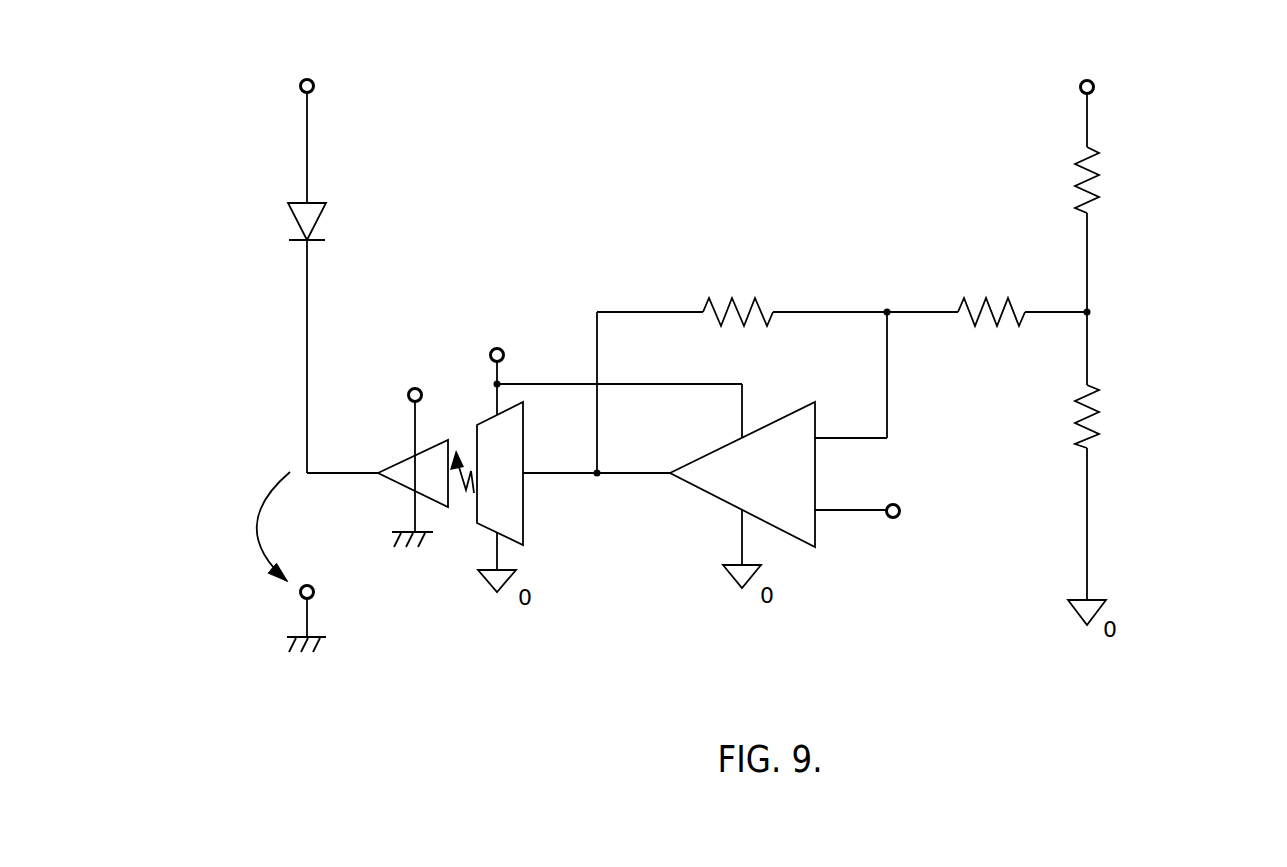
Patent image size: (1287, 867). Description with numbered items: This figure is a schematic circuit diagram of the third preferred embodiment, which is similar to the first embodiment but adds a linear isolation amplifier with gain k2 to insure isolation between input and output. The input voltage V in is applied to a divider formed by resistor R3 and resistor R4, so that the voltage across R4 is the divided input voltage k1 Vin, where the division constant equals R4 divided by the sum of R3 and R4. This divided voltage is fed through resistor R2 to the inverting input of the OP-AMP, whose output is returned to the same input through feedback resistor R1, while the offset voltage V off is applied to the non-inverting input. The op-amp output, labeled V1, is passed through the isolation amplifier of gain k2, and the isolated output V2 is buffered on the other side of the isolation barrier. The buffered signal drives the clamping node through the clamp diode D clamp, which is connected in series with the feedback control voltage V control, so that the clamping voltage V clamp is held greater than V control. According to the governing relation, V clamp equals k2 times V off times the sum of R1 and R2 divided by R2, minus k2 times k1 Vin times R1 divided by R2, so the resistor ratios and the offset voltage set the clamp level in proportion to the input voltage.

The feedback control voltage level V control is at (253, 130).
The clamp diode D clamp is at (254, 221).
The clamping voltage level V clamp is at (240, 562).
The voltage V2 terminal / buffer amplifier V2 is at (413, 451).
The linear isolation amplifier gain k2 is at (458, 449).
The voltage V1 terminal V1 is at (493, 364).
The operational amplifier OP-AMP is at (742, 474).
The offset voltage V off is at (890, 510).
The resistor R1 is at (738, 294).
The resistor R2 is at (991, 293).
The resistor R3 is at (1108, 180).
The resistor R4 is at (1110, 416).
The input voltage V in is at (1114, 103).
The divided input voltage k1 Vin is at (1140, 330).